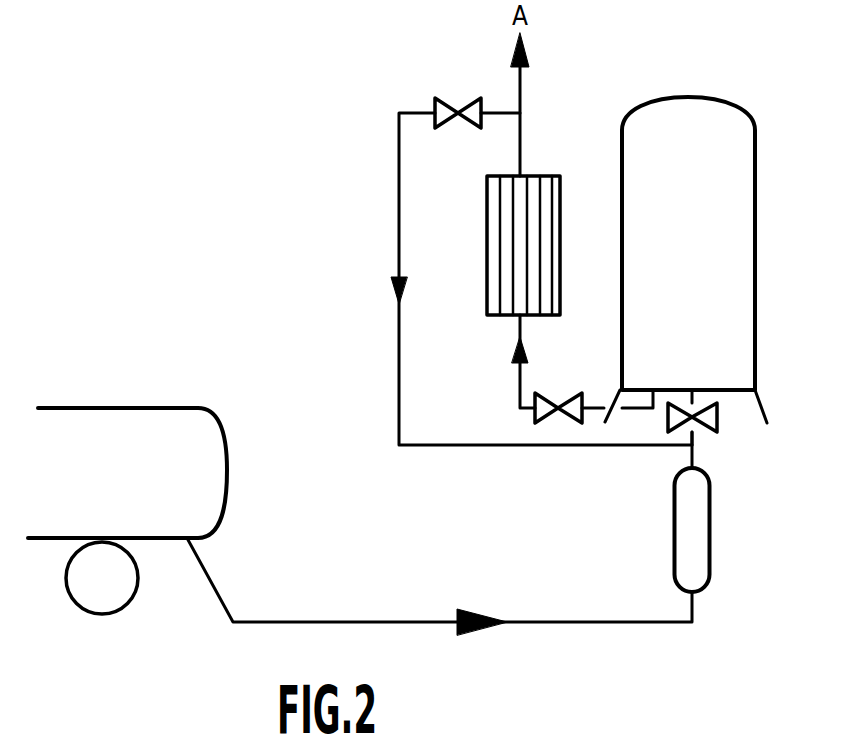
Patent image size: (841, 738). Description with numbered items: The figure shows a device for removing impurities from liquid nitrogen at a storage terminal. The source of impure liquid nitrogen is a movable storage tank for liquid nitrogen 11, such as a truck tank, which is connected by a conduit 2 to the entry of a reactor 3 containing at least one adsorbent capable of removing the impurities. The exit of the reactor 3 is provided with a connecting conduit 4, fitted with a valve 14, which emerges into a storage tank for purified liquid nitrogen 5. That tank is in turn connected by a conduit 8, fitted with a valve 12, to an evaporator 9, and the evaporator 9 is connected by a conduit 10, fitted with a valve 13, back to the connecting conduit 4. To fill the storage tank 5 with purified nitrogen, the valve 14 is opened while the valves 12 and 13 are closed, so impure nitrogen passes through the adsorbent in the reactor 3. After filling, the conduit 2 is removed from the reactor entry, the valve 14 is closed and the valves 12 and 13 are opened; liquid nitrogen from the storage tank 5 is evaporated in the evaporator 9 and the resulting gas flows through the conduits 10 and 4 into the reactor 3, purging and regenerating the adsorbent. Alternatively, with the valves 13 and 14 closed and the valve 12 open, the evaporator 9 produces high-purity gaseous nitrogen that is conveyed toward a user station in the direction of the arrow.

The conduit 2 is at (348, 621).
The reactor 3 is at (710, 548).
The connecting conduit 4 is at (693, 438).
The storage tank for purified liquid nitrogen 5 is at (756, 215).
The conduit 8 is at (518, 385).
The evaporator 9 is at (540, 176).
The conduit 10 is at (398, 208).
The movable storage tank for liquid nitrogen 11 is at (229, 470).
The valve 12 is at (551, 393).
The valve 13 is at (447, 99).
The valve 14 is at (718, 418).